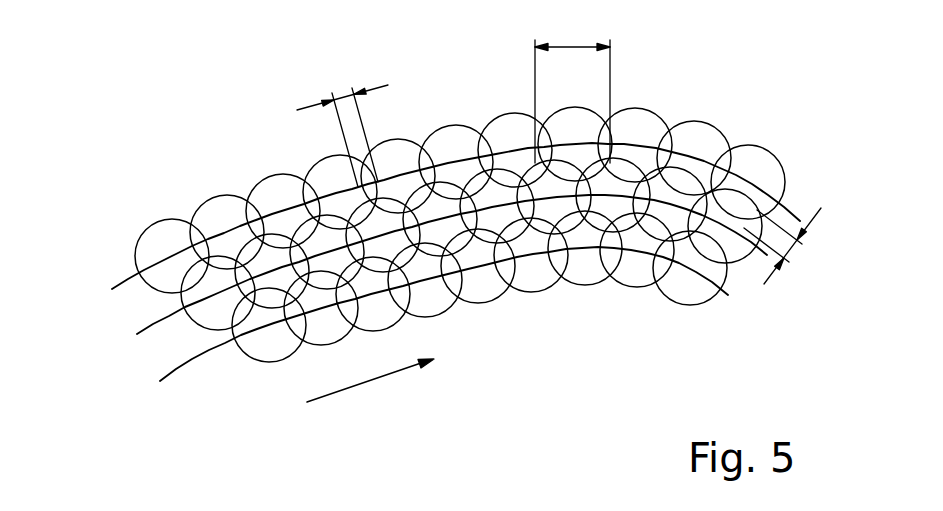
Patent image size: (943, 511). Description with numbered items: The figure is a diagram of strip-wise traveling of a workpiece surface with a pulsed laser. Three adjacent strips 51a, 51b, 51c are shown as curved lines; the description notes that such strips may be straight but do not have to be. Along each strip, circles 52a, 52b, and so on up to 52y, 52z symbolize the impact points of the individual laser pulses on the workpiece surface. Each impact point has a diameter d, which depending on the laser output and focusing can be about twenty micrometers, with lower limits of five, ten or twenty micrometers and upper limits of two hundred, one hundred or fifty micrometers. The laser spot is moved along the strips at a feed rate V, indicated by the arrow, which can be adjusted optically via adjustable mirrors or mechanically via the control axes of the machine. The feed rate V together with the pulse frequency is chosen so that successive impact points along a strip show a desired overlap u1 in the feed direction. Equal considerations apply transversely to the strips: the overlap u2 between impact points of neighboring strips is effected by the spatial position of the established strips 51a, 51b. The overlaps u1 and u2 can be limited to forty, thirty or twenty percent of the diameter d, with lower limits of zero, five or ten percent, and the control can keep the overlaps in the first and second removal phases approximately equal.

The strip 51a is at (113, 288).
The strip 51b is at (138, 333).
The strip 51c is at (172, 378).
The impact point circle 52a is at (160, 230).
The impact point circle 52b is at (220, 203).
The impact point circle 52y is at (633, 285).
The impact point circle 52z is at (689, 302).
The overlap in feed direction u1 is at (342, 126).
The overlap transverse to the strips u2 is at (791, 246).
The impact point diameter d is at (572, 89).
The feed rate V is at (370, 386).